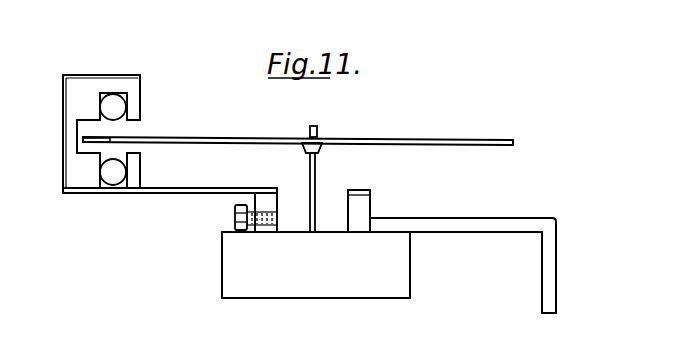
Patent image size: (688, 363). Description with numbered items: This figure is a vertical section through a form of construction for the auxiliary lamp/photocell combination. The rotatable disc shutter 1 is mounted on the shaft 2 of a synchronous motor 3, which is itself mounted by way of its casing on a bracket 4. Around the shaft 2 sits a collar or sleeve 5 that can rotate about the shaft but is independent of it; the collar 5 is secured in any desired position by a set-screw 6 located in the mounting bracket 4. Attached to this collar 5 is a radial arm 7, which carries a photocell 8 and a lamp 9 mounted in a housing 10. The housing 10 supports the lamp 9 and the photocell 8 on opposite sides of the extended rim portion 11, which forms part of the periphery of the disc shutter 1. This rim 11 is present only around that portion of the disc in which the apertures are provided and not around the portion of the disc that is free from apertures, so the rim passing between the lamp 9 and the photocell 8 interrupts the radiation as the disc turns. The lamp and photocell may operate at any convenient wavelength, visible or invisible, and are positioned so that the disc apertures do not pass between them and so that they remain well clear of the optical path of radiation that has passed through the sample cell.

The rotatable disc shutter 1 is at (388, 137).
The shaft 2 is at (318, 128).
The synchronous motor 3 is at (410, 277).
The bracket 4 is at (548, 218).
The collar 5 is at (272, 207).
The set-screw 6 is at (235, 219).
The radial arm 7 is at (156, 192).
The photocell 8 is at (120, 108).
The lamp 9 is at (112, 176).
The housing 10 is at (72, 108).
The extended rim portion 11 is at (103, 137).